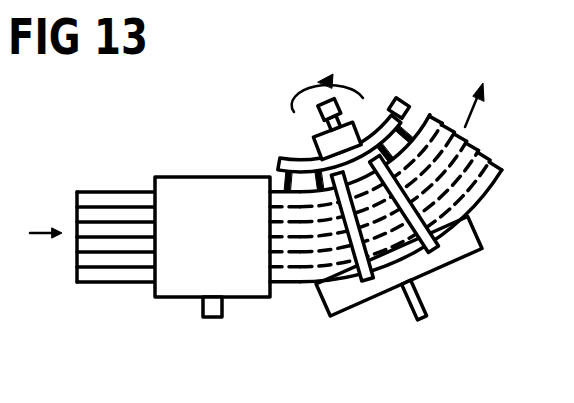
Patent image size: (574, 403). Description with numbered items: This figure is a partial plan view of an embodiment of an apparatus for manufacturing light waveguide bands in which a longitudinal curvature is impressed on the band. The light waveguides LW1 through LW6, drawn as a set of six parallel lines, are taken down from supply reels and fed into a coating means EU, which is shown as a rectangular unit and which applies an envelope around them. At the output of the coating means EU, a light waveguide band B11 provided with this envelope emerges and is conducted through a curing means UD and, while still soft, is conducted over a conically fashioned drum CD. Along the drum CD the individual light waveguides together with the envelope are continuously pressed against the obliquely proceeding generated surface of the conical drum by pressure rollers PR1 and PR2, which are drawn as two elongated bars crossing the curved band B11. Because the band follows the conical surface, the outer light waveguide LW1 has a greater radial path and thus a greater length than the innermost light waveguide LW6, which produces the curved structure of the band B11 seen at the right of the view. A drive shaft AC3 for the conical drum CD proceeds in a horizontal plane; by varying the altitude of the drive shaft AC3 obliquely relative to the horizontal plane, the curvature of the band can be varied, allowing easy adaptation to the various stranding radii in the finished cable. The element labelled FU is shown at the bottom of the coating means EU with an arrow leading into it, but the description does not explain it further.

The light waveguide LW6 is at (113, 192).
The light waveguide LW1 is at (118, 282).
The coating means EU is at (197, 187).
The feed unit input FU is at (211, 326).
The conical drum CD is at (312, 128).
The curing means UD is at (396, 102).
The light waveguide band B11 is at (484, 193).
The pressure roller PR1 is at (358, 285).
The pressure roller PR2 is at (444, 252).
The drive shaft AC3 is at (421, 316).